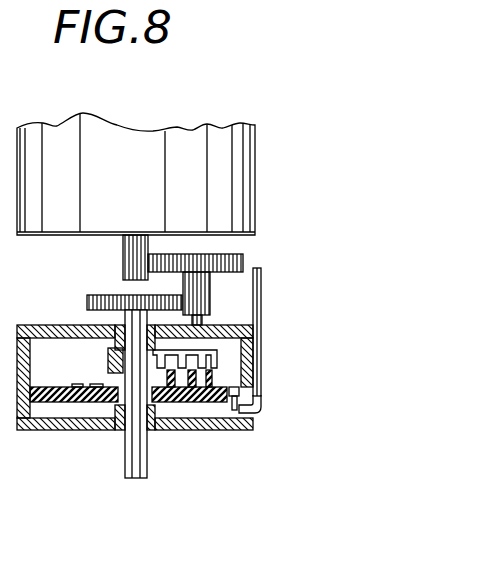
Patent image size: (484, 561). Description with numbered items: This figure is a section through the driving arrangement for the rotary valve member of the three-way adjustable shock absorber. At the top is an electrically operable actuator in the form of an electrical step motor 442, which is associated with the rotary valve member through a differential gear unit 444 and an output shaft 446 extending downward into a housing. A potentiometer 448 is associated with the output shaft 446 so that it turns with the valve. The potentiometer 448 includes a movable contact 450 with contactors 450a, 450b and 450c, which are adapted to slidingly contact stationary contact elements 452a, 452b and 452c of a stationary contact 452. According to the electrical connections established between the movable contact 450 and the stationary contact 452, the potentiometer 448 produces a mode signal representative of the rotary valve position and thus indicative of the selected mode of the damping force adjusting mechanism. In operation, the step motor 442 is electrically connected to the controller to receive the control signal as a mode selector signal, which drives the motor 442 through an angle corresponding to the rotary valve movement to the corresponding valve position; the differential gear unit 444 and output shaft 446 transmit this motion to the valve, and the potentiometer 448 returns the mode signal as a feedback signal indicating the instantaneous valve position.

The electrical step motor 442 is at (255, 162).
The differential gear unit 444 is at (258, 248).
The output shaft 446 is at (120, 316).
The potentiometer 448 is at (230, 347).
The movable contact 450 is at (218, 368).
The contactor 450a is at (172, 402).
The contactor 450b is at (203, 402).
The contactor 450c is at (213, 382).
The stationary contact 452 is at (142, 407).
The stationary contact element 452a is at (163, 403).
The stationary contact element 452b is at (203, 336).
The stationary contact element 452c is at (262, 386).